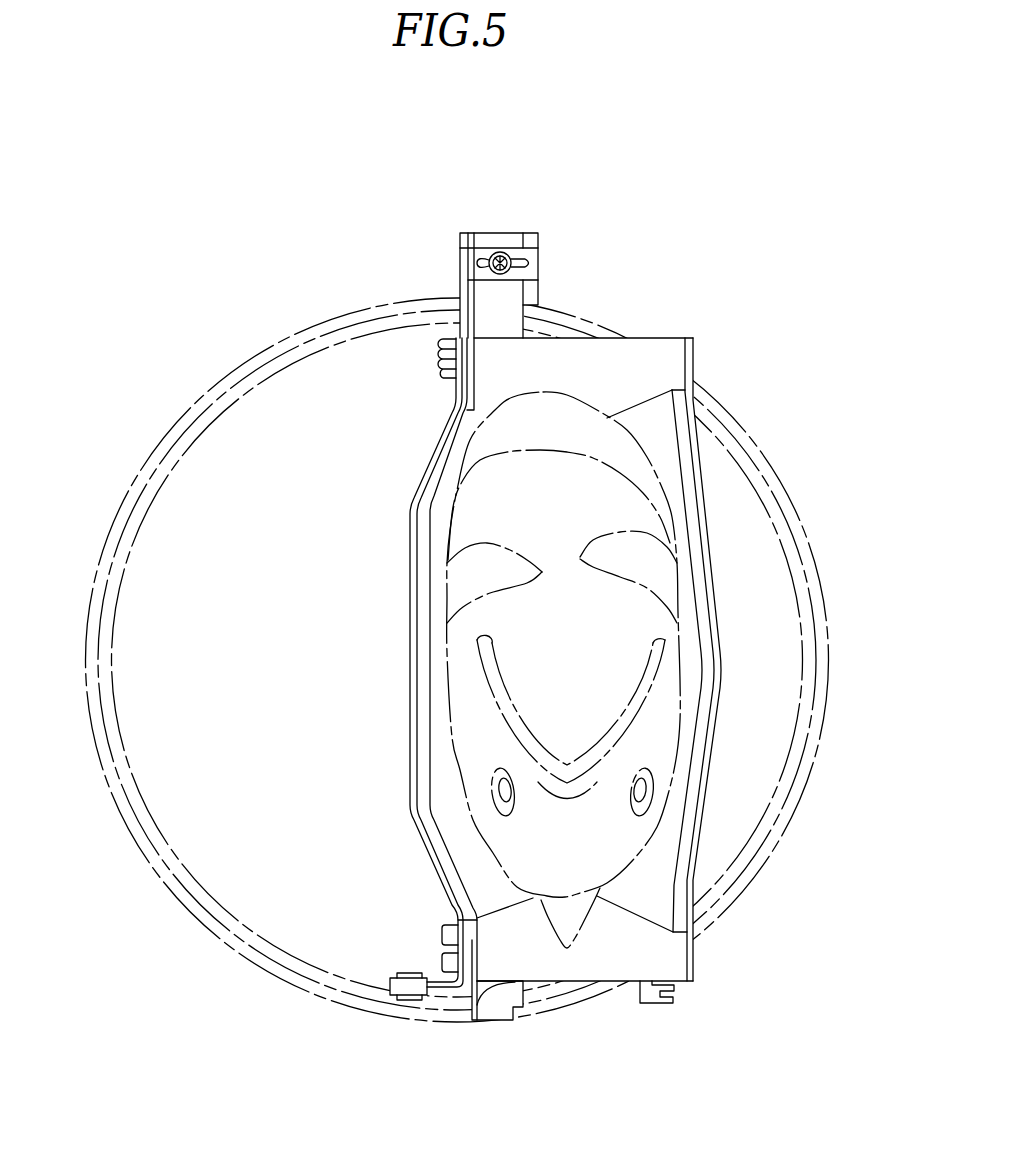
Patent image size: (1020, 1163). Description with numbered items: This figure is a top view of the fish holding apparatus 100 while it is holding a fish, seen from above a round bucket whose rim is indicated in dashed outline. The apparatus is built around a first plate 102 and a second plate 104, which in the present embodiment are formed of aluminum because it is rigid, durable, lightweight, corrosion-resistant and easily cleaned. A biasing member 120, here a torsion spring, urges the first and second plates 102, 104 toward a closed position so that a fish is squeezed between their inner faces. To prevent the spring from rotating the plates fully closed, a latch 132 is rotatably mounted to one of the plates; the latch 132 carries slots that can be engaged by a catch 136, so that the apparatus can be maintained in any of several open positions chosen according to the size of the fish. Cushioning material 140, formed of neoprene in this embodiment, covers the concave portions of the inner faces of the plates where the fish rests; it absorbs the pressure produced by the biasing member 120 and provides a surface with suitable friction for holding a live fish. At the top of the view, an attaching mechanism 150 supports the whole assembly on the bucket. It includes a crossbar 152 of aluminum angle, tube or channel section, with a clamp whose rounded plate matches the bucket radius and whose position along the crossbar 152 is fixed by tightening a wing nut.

The fish holding apparatus 100 is at (689, 258).
The first plate 102 is at (693, 343).
The second plate 104 is at (450, 403).
The biasing member 120 is at (440, 342).
The latch 132 is at (408, 992).
The catch 136 is at (657, 1003).
The cushioning material 140 is at (680, 935).
The attaching mechanism 150 is at (550, 222).
The crossbar 152 is at (507, 298).